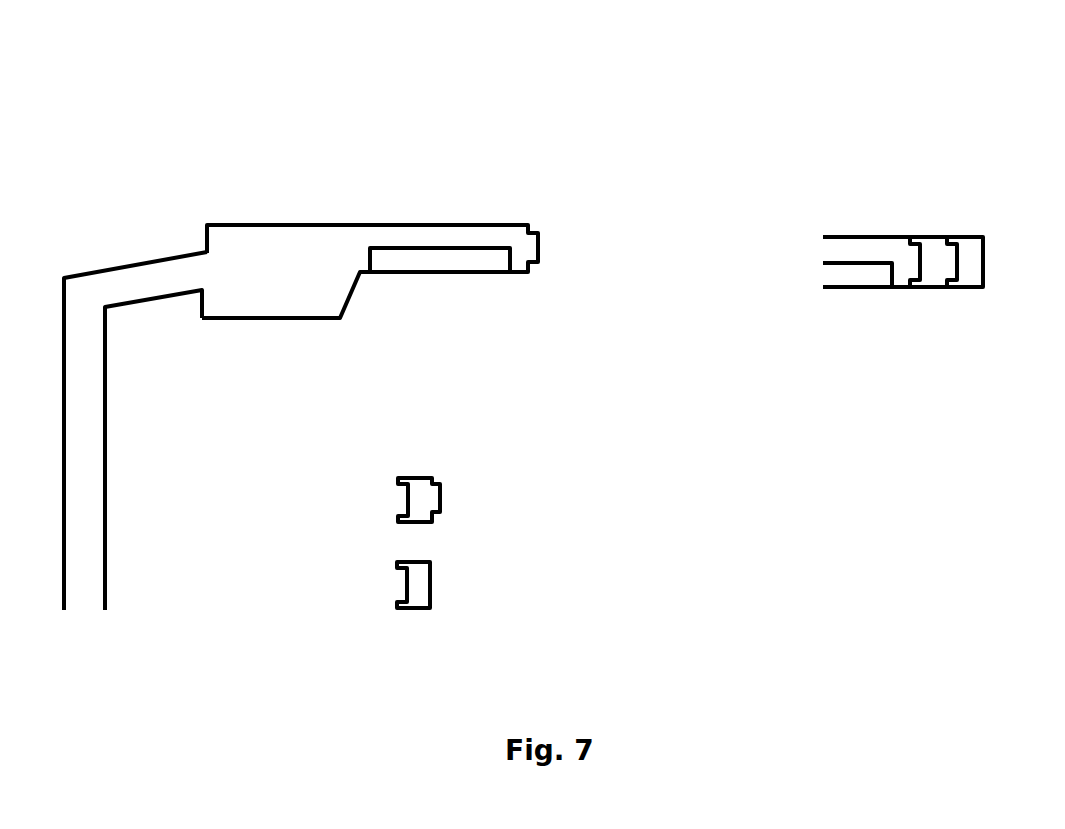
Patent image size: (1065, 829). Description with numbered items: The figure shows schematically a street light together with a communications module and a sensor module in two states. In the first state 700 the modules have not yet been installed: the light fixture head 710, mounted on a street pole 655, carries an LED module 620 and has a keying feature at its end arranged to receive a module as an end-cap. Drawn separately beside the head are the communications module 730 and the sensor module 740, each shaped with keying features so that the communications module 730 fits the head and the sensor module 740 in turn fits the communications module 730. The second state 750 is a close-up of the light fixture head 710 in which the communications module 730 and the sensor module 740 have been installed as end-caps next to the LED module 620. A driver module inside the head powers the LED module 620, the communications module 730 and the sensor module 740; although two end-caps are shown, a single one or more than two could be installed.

The first state 700 is at (418, 93).
The light fixture head 710 is at (228, 195).
The street pole 655 is at (117, 512).
The LED module 620 is at (588, 337).
The communications module 730 is at (470, 497).
The sensor module 740 is at (613, 553).
The second state 750 is at (928, 110).